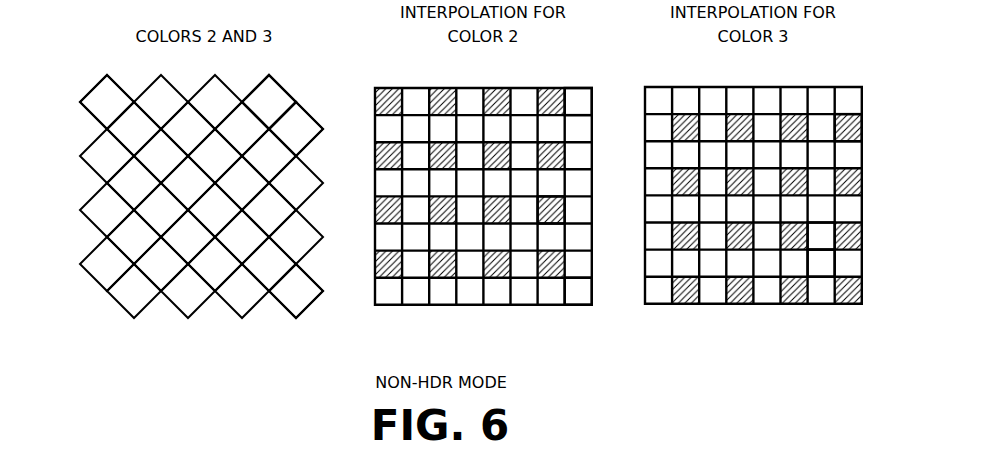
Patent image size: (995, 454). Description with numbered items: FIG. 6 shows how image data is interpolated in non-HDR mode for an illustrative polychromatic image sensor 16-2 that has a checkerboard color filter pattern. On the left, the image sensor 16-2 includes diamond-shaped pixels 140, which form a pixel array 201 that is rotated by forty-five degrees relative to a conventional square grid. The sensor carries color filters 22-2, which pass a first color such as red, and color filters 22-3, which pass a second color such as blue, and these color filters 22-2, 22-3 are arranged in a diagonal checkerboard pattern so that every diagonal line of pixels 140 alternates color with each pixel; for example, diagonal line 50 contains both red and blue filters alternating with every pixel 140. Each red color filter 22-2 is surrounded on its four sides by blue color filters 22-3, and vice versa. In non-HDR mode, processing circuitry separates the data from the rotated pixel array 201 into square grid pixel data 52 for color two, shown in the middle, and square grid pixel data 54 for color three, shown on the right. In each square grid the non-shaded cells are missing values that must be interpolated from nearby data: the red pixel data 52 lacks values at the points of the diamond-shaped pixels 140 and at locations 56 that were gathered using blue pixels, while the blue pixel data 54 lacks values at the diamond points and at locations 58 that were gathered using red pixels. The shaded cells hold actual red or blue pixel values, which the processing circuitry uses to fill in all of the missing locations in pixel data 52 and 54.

The image sensor 16-2 is at (103, 321).
The color filters 22-2 is at (85, 196).
The color filters 22-3 is at (227, 305).
The diagonal line 50 is at (93, 89).
The pixel array 201 is at (290, 66).
The diamond-shaped pixels 140 is at (293, 89).
The square grid pixel data 52 is at (431, 327).
The square grid pixel data 54 is at (701, 326).
The locations 56 is at (577, 290).
The locations 58 is at (821, 263).